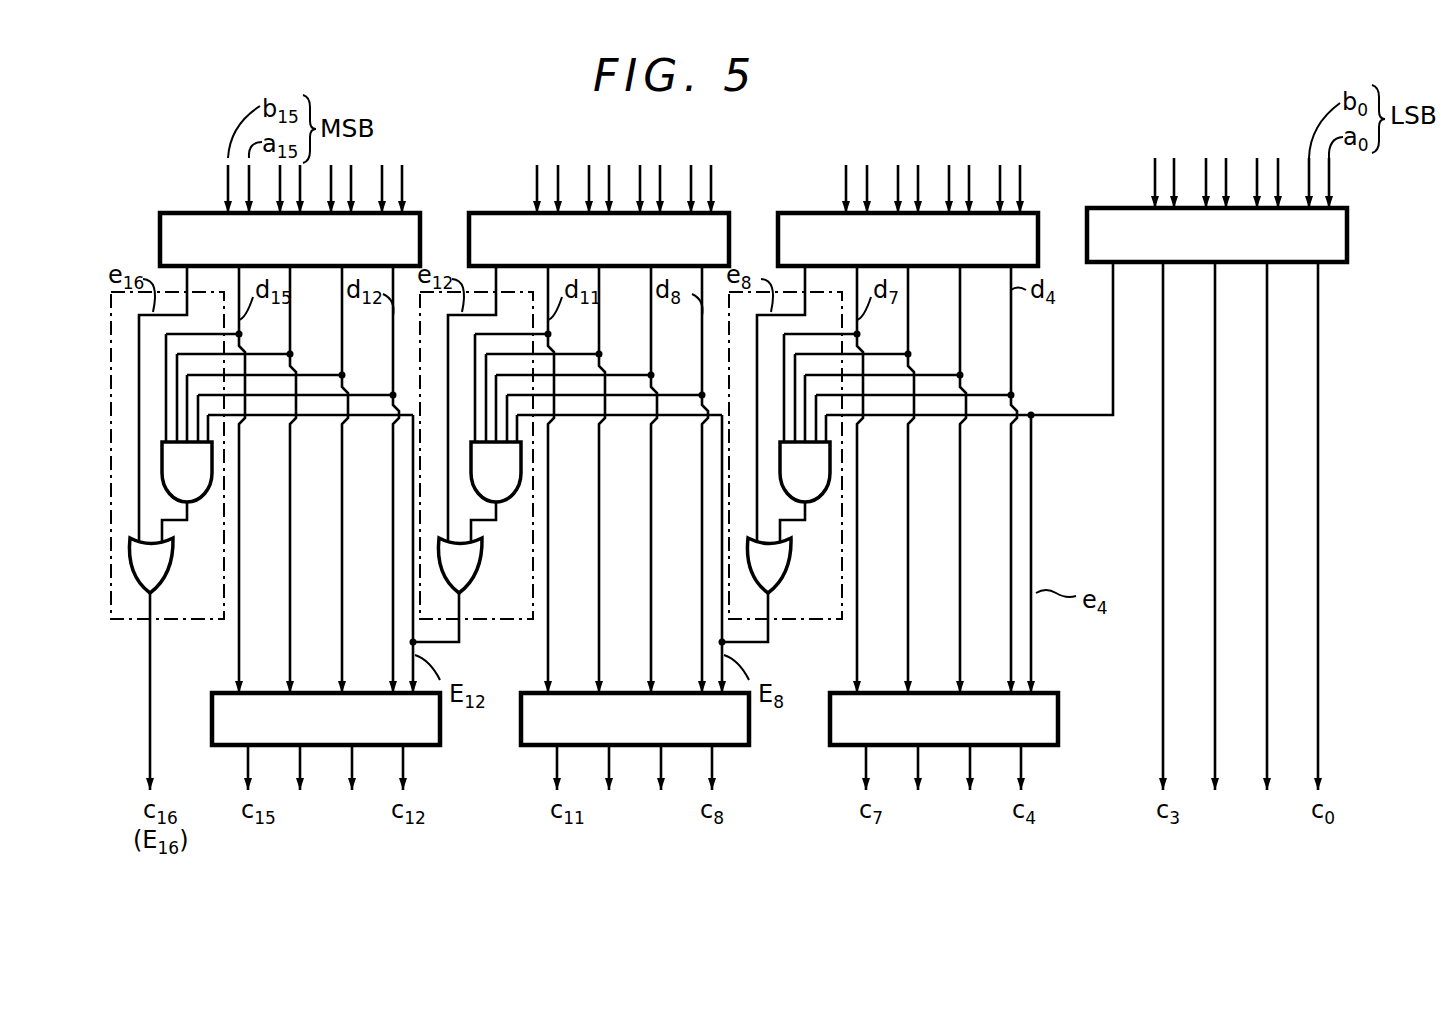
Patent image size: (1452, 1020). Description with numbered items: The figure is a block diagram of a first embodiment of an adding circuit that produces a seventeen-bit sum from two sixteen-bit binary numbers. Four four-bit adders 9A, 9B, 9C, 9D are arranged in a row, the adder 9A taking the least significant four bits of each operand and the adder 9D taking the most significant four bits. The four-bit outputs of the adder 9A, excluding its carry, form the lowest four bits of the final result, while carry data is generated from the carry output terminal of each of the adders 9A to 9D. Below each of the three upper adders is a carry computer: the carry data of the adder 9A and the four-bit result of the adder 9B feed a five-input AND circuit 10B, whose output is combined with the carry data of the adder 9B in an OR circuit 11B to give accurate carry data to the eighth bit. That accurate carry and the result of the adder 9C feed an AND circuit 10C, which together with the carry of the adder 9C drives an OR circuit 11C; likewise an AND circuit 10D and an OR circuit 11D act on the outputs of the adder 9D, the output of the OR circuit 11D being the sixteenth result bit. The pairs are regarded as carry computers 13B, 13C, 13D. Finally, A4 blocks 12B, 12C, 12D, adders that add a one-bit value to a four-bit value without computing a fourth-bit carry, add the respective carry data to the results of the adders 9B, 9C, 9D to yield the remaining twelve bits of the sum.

The 4-bit adder 9A is at (1347, 228).
The 4-bit adder 9B is at (930, 216).
The 4-bit adder 9C is at (621, 216).
The 4-bit adder 9D is at (420, 240).
The 5-input AND circuit 10B is at (813, 497).
The 5-input AND circuit 10C is at (504, 497).
The 5-input AND circuit 10D is at (204, 503).
The OR circuit 11B is at (792, 576).
The OR circuit 11C is at (483, 576).
The OR circuit 11D is at (171, 568).
The A4 block 12B is at (975, 741).
The A4 block 12C is at (666, 741).
The A4 block 12D is at (440, 720).
The carry computer 13B is at (785, 481).
The carry computer 13C is at (476, 481).
The carry computer 13D is at (170, 622).